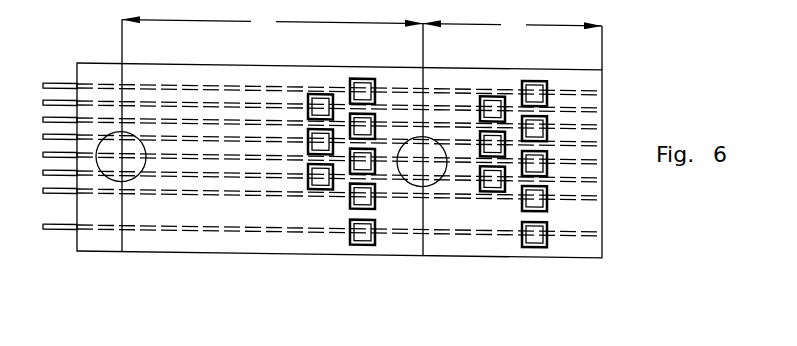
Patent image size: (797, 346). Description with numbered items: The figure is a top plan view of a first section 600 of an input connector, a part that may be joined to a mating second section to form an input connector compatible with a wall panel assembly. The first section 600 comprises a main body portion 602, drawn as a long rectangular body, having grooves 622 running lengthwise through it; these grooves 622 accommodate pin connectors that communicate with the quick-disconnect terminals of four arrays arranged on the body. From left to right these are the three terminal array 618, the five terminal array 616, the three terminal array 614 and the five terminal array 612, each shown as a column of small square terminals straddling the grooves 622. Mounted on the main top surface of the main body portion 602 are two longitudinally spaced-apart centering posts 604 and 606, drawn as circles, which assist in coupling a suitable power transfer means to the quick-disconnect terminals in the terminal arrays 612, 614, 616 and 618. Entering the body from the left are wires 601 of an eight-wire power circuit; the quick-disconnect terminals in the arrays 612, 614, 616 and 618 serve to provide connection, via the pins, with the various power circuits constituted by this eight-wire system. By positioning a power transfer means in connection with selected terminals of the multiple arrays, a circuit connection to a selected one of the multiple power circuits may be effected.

The first section of input connector 600 is at (628, 90).
The wires 601 is at (60, 230).
The main body portion 602 is at (240, 253).
The centering post 604 is at (428, 187).
The centering post 606 is at (138, 181).
The five terminal array 612 is at (538, 247).
The three terminal array 614 is at (491, 192).
The five terminal array 616 is at (363, 246).
The three terminal array 618 is at (318, 191).
The grooves 622 is at (167, 87).